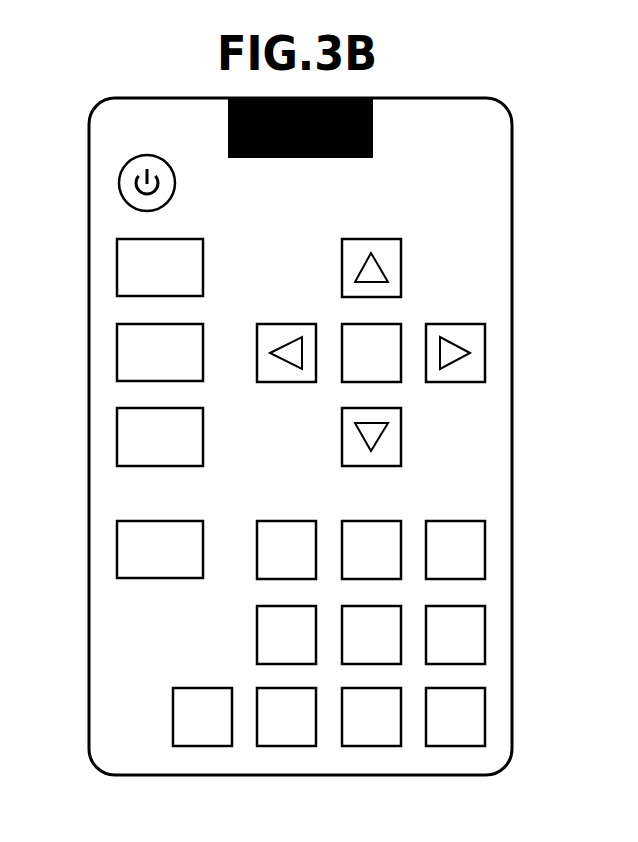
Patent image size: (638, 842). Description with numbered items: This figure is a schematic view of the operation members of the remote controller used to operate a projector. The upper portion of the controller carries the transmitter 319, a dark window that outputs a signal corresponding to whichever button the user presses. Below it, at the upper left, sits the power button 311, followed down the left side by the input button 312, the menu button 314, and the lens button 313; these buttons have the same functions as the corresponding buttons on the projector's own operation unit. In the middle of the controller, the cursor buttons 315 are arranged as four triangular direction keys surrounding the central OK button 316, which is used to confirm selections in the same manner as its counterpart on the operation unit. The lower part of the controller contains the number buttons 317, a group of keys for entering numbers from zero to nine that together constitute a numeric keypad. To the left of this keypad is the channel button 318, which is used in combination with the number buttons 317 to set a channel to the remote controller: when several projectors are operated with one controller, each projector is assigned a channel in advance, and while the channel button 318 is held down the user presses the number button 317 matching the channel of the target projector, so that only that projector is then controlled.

The power button 311 is at (118, 187).
The input button 312 is at (117, 272).
The lens button 313 is at (117, 441).
The menu button 314 is at (117, 357).
The cursor buttons 315 is at (485, 353).
The OK button 316 is at (388, 322).
The number buttons 317 is at (492, 547).
The channel button 318 is at (117, 557).
The transmitter 319 is at (373, 128).